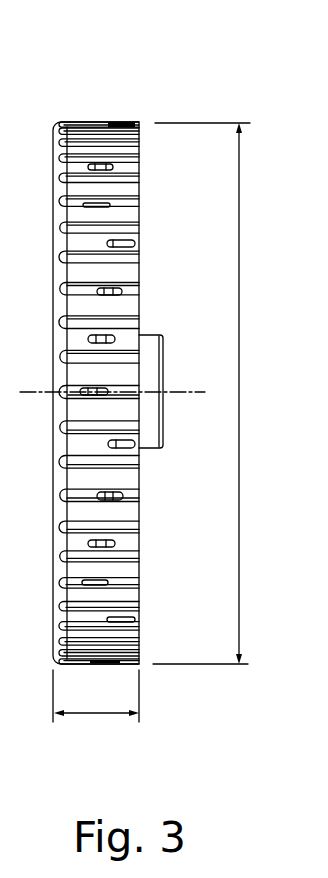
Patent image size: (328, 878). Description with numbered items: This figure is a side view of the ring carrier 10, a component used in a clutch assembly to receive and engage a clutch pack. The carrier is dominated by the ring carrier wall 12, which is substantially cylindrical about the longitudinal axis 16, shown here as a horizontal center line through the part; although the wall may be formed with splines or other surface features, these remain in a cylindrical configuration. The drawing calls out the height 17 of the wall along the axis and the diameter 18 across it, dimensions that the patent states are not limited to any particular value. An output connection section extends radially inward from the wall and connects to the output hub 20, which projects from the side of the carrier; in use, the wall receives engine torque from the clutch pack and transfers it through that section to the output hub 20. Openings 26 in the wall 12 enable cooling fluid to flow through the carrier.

The ring carrier 10 is at (150, 89).
The ring carrier wall 12 is at (100, 122).
The longitudinal axis 16 is at (193, 391).
The height 17 is at (100, 715).
The diameter 18 is at (240, 313).
The output hub 20 is at (153, 340).
The openings 26 is at (90, 338).